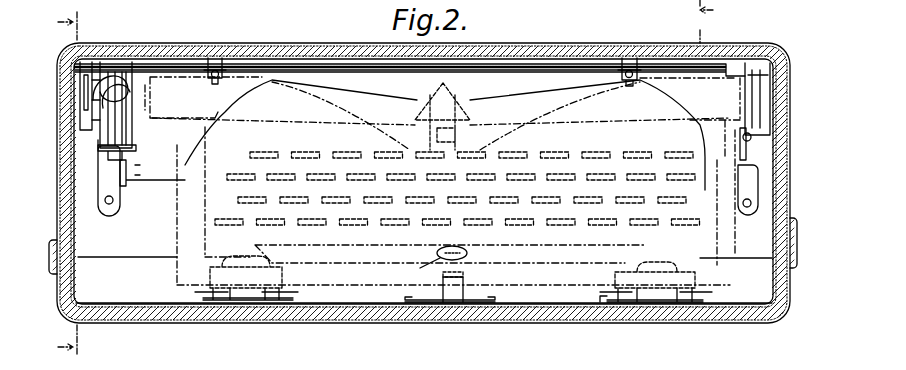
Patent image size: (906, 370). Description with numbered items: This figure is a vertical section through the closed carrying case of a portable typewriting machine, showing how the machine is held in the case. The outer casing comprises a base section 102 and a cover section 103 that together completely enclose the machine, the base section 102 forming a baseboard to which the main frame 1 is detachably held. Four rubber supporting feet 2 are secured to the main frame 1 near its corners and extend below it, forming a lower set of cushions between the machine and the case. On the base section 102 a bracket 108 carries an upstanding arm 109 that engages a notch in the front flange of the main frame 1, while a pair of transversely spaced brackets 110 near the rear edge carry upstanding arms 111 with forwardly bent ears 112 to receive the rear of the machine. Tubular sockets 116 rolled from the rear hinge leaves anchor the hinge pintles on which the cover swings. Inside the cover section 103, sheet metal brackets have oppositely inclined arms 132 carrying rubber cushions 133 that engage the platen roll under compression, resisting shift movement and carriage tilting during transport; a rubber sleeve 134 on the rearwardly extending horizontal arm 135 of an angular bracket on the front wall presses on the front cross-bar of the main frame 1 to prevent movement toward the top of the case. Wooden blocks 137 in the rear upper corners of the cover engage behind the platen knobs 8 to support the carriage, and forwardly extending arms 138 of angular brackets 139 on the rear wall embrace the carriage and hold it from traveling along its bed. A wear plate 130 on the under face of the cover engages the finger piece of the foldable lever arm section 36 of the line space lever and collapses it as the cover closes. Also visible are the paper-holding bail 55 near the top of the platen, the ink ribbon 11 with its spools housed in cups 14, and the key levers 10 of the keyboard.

The main frame 1 is at (69, 185).
The rubber supporting feet 2 is at (704, 21).
The platen knobs 8 is at (56, 158).
The key levers 10 is at (297, 156).
The ink ribbon 11 is at (378, 105).
The cups 14 is at (735, 82).
The foldable lever arm section 36 is at (80, 87).
The paper-holding bail 55 is at (498, 106).
The base section 102 is at (127, 303).
The cover section 103 is at (343, 40).
The bracket 108 is at (428, 302).
The upstanding arm 109 is at (465, 290).
The brackets 110 is at (603, 305).
The upstanding arms 111 is at (237, 297).
The ears 112 is at (218, 293).
The tubular sockets 116 is at (292, 300).
The wear plate 130 is at (57, 72).
The oppositely inclined arms 132 is at (216, 58).
The rubber cushions 133 is at (230, 100).
The rubber sleeve 134 is at (422, 273).
The rearwardly extending horizontal arm 135 is at (468, 251).
The wooden blocks 137 is at (80, 115).
The forwardly extending arms 138 is at (126, 181).
The angular brackets 139 is at (110, 210).